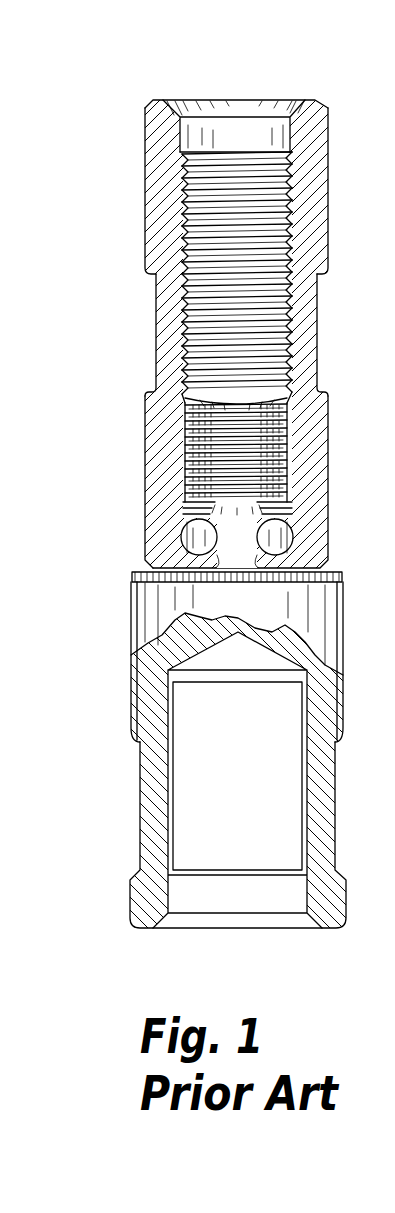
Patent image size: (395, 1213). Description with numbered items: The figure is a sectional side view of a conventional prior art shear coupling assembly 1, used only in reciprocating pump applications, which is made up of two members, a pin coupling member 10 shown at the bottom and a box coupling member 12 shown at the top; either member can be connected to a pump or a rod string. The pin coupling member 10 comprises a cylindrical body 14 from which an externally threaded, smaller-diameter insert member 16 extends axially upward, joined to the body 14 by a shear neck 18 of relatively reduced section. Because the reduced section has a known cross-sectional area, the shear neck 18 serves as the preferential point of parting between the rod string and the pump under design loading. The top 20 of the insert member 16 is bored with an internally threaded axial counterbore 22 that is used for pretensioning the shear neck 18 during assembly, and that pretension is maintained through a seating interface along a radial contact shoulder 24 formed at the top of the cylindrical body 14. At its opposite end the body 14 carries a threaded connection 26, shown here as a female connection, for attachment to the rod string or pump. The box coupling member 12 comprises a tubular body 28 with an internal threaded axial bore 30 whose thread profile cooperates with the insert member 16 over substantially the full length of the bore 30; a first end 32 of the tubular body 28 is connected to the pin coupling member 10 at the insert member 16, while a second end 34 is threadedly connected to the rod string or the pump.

The shear coupling assembly 1 is at (93, 135).
The pin coupling member 10 is at (131, 690).
The box coupling member 12 is at (317, 287).
The cylindrical body 14 is at (140, 825).
The insert member 16 is at (286, 468).
The shear neck 18 is at (213, 537).
The top of the insert member 20 is at (287, 392).
The internally threaded axial counterbore 22 is at (200, 403).
The radial contact shoulder 24 is at (330, 568).
The threaded connection 26 is at (307, 857).
The tubular body 28 is at (147, 222).
The internal threaded axial bore 30 is at (270, 147).
The first end 32 is at (150, 566).
The second end 34 is at (163, 100).